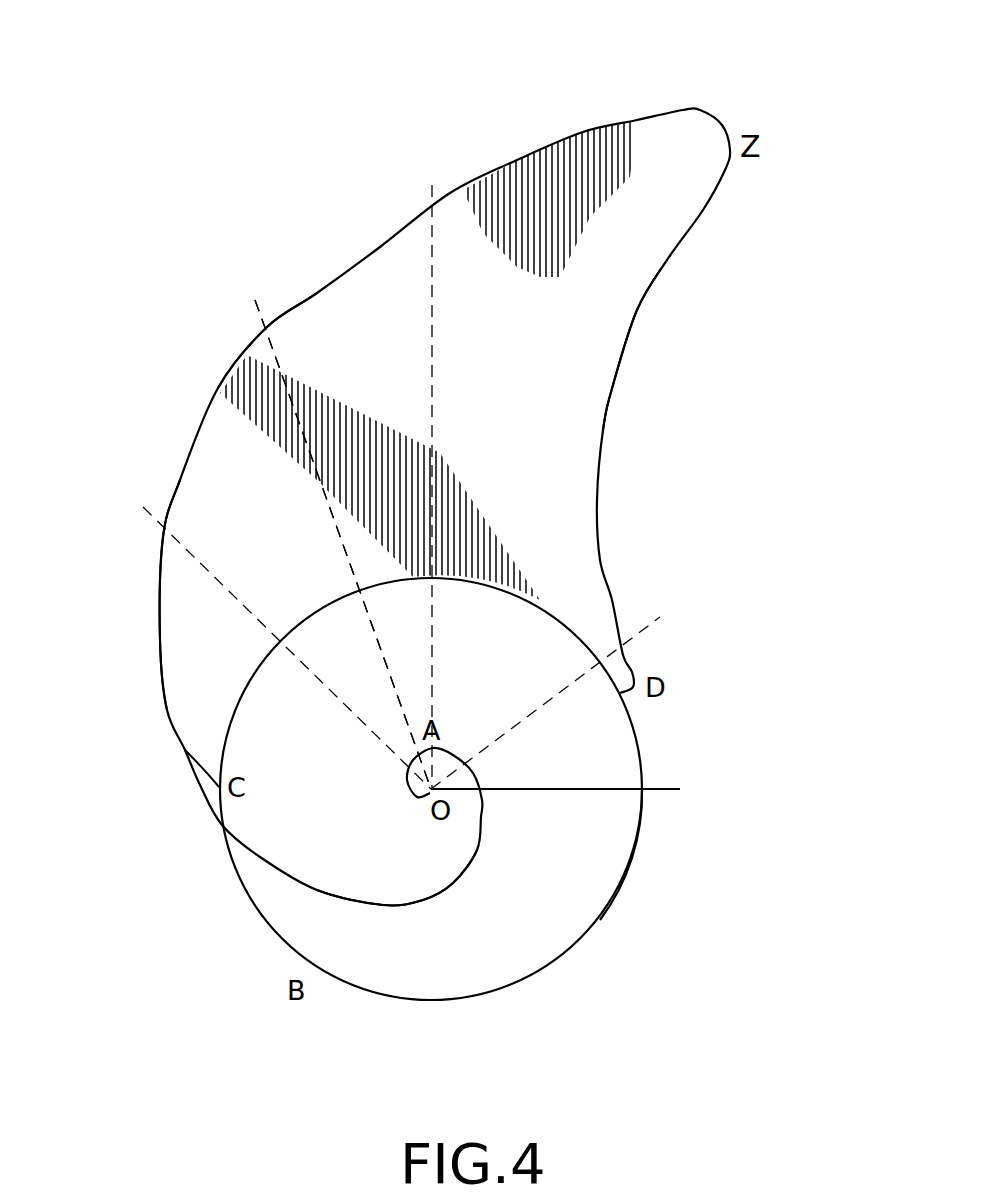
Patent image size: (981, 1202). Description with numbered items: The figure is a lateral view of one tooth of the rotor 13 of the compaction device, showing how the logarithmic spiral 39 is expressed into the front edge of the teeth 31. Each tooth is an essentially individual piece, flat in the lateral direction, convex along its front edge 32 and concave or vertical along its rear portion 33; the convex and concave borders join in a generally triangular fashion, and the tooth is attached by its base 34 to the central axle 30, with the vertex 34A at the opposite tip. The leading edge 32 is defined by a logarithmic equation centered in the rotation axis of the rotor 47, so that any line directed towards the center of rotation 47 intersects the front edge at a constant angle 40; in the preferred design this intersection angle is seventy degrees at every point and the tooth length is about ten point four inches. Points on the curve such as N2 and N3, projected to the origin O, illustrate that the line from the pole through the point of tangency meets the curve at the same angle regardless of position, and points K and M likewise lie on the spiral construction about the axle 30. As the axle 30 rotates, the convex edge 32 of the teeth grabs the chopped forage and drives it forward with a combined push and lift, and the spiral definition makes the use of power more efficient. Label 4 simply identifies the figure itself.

The rotor 13 is at (762, 89).
The central axle 30 is at (645, 751).
The teeth 31 is at (308, 343).
The front edge 32 is at (146, 638).
The rear concave portion 33 is at (614, 262).
The base 34 is at (379, 480).
The vertex 34A is at (647, 128).
The logarithmic spiral 39 is at (453, 893).
The angle 40 is at (172, 498).
The section line 4 is at (275, 293).
The center of rotation 47 is at (606, 795).
The normal line N3 is at (280, 471).
The normal line N2 is at (333, 528).
The point K line K is at (545, 703).
The point M is at (629, 880).